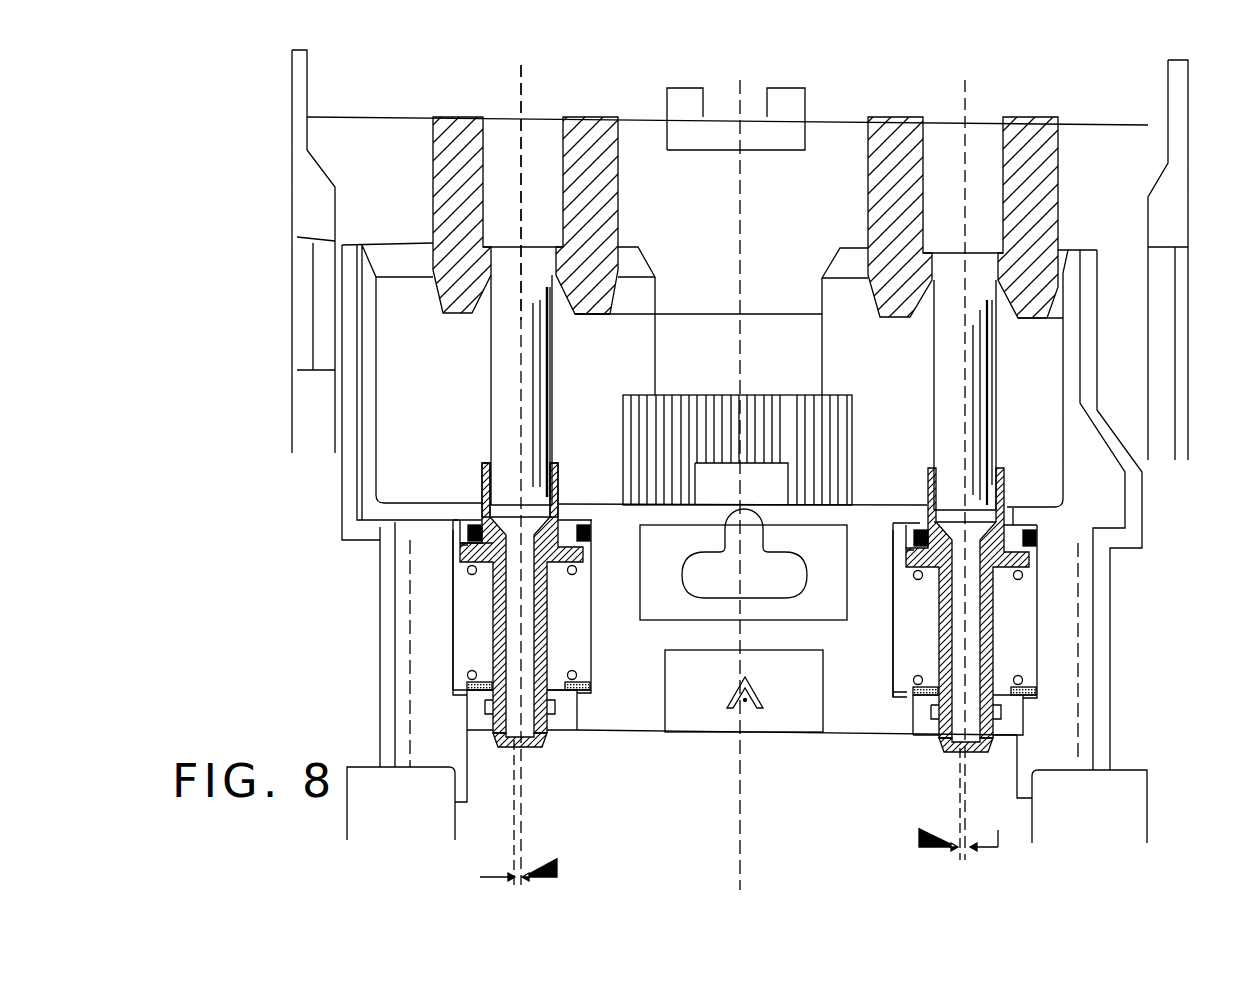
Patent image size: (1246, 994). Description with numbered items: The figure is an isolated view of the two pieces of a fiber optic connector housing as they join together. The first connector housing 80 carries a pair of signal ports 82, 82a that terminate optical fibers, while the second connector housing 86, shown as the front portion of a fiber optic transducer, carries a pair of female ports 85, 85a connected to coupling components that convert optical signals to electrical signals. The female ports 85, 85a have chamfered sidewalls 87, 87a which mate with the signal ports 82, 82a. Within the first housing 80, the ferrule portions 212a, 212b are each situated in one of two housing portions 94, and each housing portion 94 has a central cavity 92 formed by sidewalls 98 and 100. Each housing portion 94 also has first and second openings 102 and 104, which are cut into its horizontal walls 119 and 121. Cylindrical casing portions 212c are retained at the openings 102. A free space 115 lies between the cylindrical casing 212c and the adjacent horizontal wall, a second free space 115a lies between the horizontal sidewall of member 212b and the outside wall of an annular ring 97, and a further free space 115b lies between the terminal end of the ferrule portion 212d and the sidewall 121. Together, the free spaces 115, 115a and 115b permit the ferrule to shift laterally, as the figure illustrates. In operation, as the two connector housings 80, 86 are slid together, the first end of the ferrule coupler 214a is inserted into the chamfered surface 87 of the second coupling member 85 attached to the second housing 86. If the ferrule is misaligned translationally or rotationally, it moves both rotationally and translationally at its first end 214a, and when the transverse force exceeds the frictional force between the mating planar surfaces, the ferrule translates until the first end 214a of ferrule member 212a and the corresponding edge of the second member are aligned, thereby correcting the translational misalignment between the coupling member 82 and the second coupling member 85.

The first connector housing 80 is at (383, 625).
The signal port 82 is at (490, 357).
The signal port 82a is at (934, 368).
The female port 85 is at (618, 222).
The female port 85a is at (1058, 197).
The second connector housing 86 is at (247, 312).
The chamfered sidewall 87 is at (580, 305).
The chamfered sidewall 87a is at (996, 313).
The central cavity 92 is at (483, 627).
The housing portion 94 is at (453, 578).
The annular ring 97 is at (462, 540).
The sidewall 98 is at (462, 667).
The sidewall 100 is at (591, 663).
The first opening 102 is at (473, 517).
The second opening 104 is at (472, 730).
The free space 115 is at (473, 510).
The second free space 115a is at (468, 536).
The free space 115b is at (473, 698).
The horizontal wall 119 is at (562, 512).
The horizontal wall 121 is at (578, 730).
The ferrule portion 212a is at (550, 386).
The ferrule portion 212b is at (587, 550).
The cylindrical casing portion 212c is at (565, 512).
The terminal end of the ferrule portion 212d is at (542, 740).
The first end of the ferrule coupler 214a is at (510, 305).